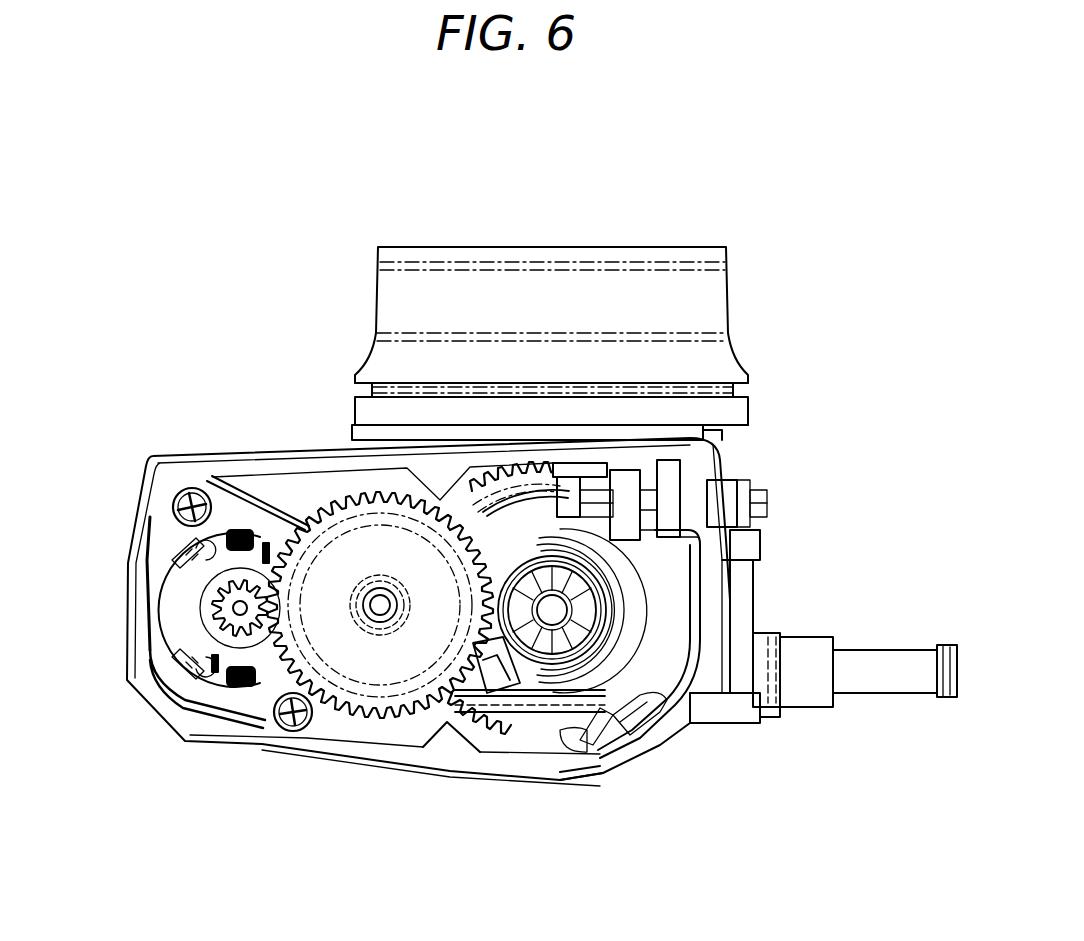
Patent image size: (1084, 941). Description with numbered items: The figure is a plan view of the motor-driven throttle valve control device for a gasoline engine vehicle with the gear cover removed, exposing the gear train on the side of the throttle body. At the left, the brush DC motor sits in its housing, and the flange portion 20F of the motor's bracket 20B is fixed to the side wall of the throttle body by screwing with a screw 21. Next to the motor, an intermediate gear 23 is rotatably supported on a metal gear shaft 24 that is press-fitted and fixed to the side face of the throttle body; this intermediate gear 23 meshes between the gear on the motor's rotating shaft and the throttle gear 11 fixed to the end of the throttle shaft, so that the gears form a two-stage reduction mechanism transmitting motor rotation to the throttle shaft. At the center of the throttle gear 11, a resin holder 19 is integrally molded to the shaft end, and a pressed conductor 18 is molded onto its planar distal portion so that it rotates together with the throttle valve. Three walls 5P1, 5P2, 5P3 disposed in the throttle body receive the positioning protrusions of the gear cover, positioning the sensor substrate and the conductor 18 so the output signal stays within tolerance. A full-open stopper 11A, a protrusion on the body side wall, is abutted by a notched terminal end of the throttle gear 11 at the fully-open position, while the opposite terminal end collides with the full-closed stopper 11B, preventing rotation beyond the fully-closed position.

The wall for positioning the gear cover 5P1 is at (535, 545).
The wall for positioning the gear cover 5P2 is at (668, 560).
The wall for positioning the gear cover 5P3 is at (447, 723).
The throttle gear 11 is at (540, 530).
The full-open stopper 11A is at (593, 777).
The full-closed stopper 11B is at (550, 455).
The conductor 18 is at (523, 682).
The resin holder 19 is at (513, 690).
The bracket 20B is at (183, 598).
The flange portion 20F is at (228, 695).
The screw 21 is at (187, 490).
The intermediate gear 23 is at (333, 553).
The gear shaft 24 is at (380, 597).